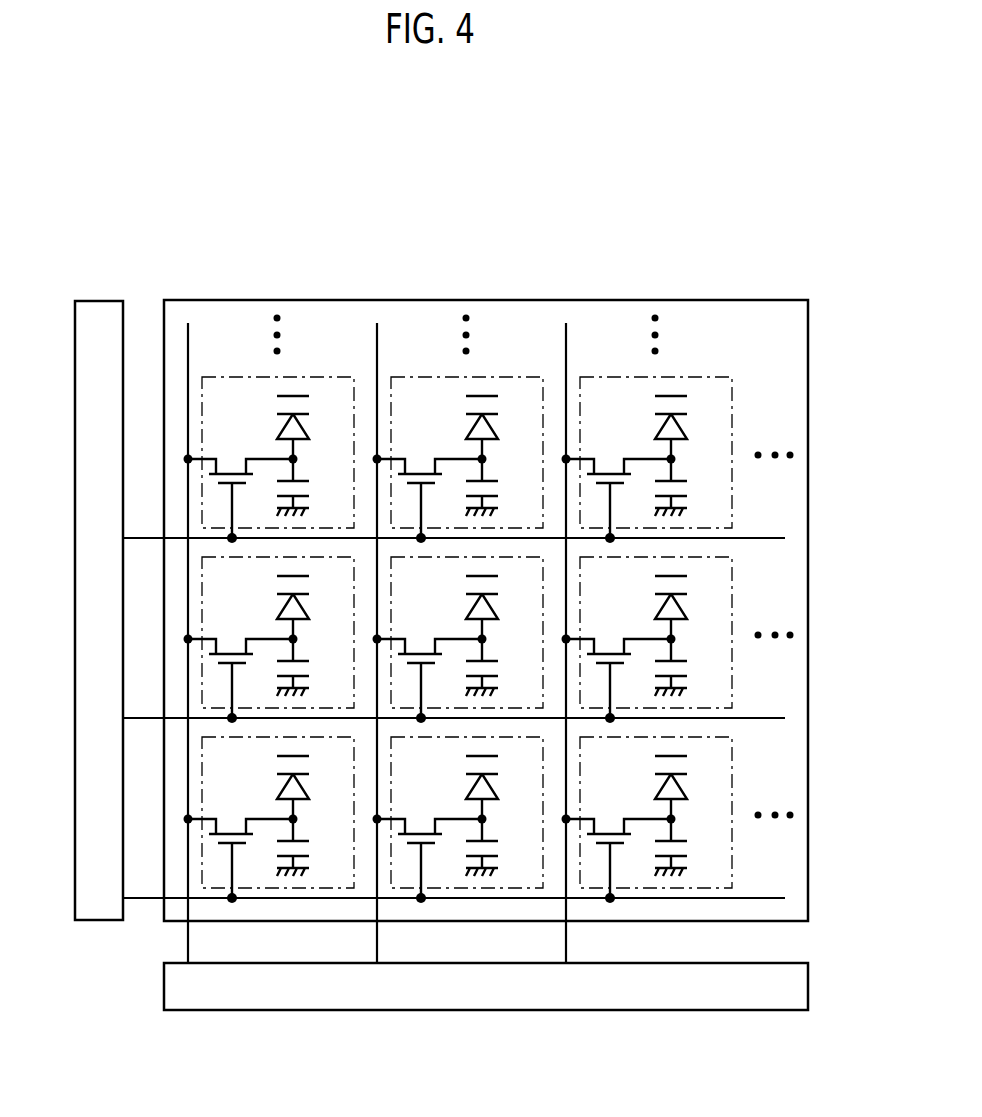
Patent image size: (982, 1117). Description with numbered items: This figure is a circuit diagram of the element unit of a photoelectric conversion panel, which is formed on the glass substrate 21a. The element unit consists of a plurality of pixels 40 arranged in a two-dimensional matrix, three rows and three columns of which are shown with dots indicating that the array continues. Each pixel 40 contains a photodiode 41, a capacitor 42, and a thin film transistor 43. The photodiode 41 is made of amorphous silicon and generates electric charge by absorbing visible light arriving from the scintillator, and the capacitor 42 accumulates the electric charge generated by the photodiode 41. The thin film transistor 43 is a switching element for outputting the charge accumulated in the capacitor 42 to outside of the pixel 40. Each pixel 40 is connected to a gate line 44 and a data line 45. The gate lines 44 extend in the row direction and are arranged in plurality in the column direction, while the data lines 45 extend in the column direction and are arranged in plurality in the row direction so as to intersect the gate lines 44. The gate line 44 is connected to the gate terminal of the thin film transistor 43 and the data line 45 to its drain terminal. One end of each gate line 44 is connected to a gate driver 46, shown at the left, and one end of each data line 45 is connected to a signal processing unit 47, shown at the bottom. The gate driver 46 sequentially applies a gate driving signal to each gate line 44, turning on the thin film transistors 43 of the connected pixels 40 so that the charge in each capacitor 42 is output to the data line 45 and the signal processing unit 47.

The glass substrate 21a is at (488, 300).
The pixel 40 is at (714, 376).
The photodiode 41 is at (303, 430).
The capacitor 42 is at (304, 480).
The thin film transistor 43 is at (229, 468).
The gate line 44 is at (143, 538).
The data line 45 is at (567, 940).
The gate driver 46 is at (98, 922).
The signal processing unit 47 is at (485, 1011).